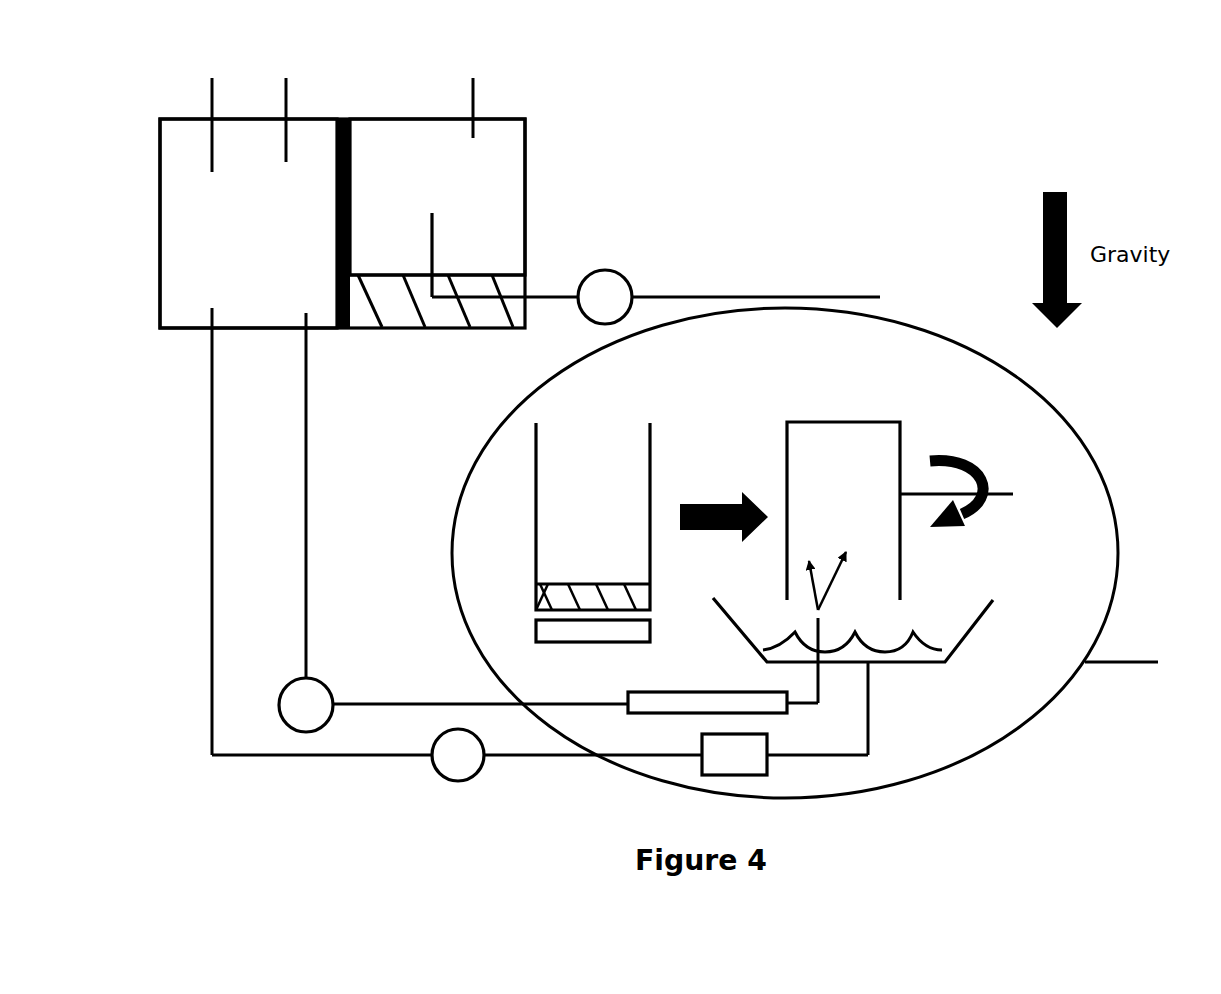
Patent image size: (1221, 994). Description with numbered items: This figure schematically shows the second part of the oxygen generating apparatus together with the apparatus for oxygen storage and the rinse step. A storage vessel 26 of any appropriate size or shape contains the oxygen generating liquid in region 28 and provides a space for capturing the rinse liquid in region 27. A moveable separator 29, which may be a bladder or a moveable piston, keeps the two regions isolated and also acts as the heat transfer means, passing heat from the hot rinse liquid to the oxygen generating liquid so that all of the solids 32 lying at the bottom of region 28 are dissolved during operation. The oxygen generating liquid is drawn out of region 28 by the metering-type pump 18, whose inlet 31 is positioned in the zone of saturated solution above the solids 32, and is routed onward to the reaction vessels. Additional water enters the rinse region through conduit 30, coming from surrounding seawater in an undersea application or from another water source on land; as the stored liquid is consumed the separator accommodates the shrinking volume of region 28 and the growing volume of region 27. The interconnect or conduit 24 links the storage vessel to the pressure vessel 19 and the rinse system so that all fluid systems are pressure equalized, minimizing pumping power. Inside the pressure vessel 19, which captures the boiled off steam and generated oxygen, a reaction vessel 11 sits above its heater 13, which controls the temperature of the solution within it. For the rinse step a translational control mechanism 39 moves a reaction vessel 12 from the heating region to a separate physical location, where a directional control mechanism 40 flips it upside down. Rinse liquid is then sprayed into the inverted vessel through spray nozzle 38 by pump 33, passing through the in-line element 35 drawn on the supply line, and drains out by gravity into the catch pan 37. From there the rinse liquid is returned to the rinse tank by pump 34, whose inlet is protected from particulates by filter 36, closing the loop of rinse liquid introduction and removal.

The reaction vessel 11 is at (593, 516).
The reaction vessel 12 is at (900, 516).
The heater 13 is at (572, 631).
The pump 18 is at (605, 276).
The pressure vessel 19 is at (832, 553).
The interconnect 24 is at (707, 402).
The storage vessel 26 is at (530, 149).
The rinse liquid region 27 is at (248, 223).
The oxygen generating liquid region 28 is at (437, 197).
The moveable separator 29 is at (352, 166).
The conduit 30 is at (210, 111).
The inlet 31 is at (447, 222).
The solids 32 is at (391, 300).
The pump 33 is at (325, 693).
The pump 34 is at (438, 762).
The heat exchanger 35 is at (707, 688).
The filter 36 is at (734, 754).
The catch pan 37 is at (955, 665).
The spray nozzle 38 is at (834, 599).
The translational control mechanism 39 is at (724, 499).
The directional control mechanism 40 is at (969, 487).